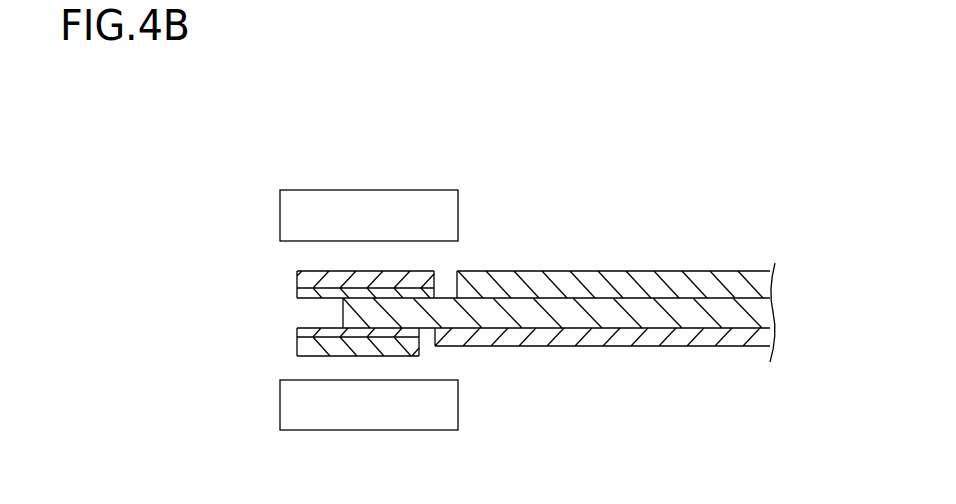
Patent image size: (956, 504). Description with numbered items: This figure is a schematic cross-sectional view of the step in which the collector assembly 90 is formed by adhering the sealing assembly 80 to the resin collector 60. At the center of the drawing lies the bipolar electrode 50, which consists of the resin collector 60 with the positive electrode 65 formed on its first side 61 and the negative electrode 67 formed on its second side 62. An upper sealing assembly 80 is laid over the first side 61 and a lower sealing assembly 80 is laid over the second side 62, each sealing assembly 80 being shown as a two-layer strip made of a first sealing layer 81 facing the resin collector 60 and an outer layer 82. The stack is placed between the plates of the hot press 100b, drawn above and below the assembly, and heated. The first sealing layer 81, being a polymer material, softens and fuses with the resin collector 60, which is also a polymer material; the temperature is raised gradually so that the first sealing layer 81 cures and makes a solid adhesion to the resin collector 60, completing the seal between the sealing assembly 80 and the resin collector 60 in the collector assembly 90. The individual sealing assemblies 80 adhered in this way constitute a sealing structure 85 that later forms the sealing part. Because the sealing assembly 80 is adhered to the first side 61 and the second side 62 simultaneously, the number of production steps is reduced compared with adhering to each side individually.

The hot press 100b is at (291, 217).
The sealing assembly 80 is at (321, 311).
The first sealing layer 81 is at (344, 311).
The outer layer of cover member 82 is at (307, 280).
The sealing structure 85 is at (453, 250).
The collector assembly 90 is at (547, 236).
The bipolar electrode 50 is at (559, 271).
The negative electrode 67 is at (639, 328).
The resin collector 60 is at (680, 313).
The positive electrode 65 is at (725, 287).
The first side 61 is at (598, 291).
The second side 62 is at (622, 328).